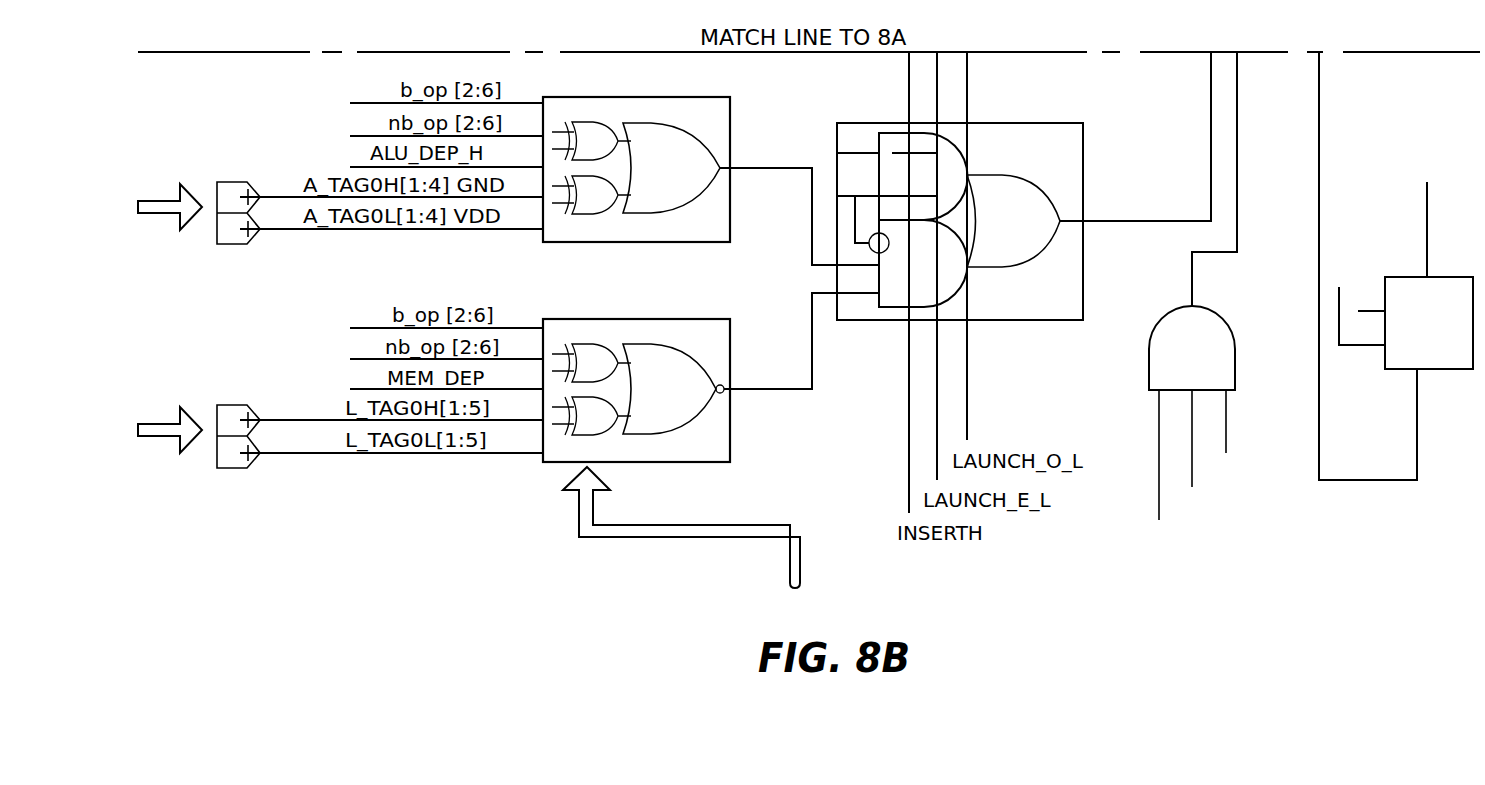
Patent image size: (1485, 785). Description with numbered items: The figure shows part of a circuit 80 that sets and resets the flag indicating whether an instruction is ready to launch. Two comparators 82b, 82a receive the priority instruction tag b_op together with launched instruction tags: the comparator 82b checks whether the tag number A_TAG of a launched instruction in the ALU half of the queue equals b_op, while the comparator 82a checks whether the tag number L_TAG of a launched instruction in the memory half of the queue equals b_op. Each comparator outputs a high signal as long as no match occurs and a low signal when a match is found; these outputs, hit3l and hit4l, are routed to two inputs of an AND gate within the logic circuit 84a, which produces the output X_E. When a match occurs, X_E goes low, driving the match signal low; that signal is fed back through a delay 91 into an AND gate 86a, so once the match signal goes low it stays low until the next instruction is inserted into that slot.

The circuit 80 is at (578, 588).
The comparator 82a is at (700, 319).
The comparator 82b is at (700, 97).
The logic circuit 84a is at (1032, 123).
The AND gate 86a is at (1218, 310).
The delay 91 is at (1450, 277).